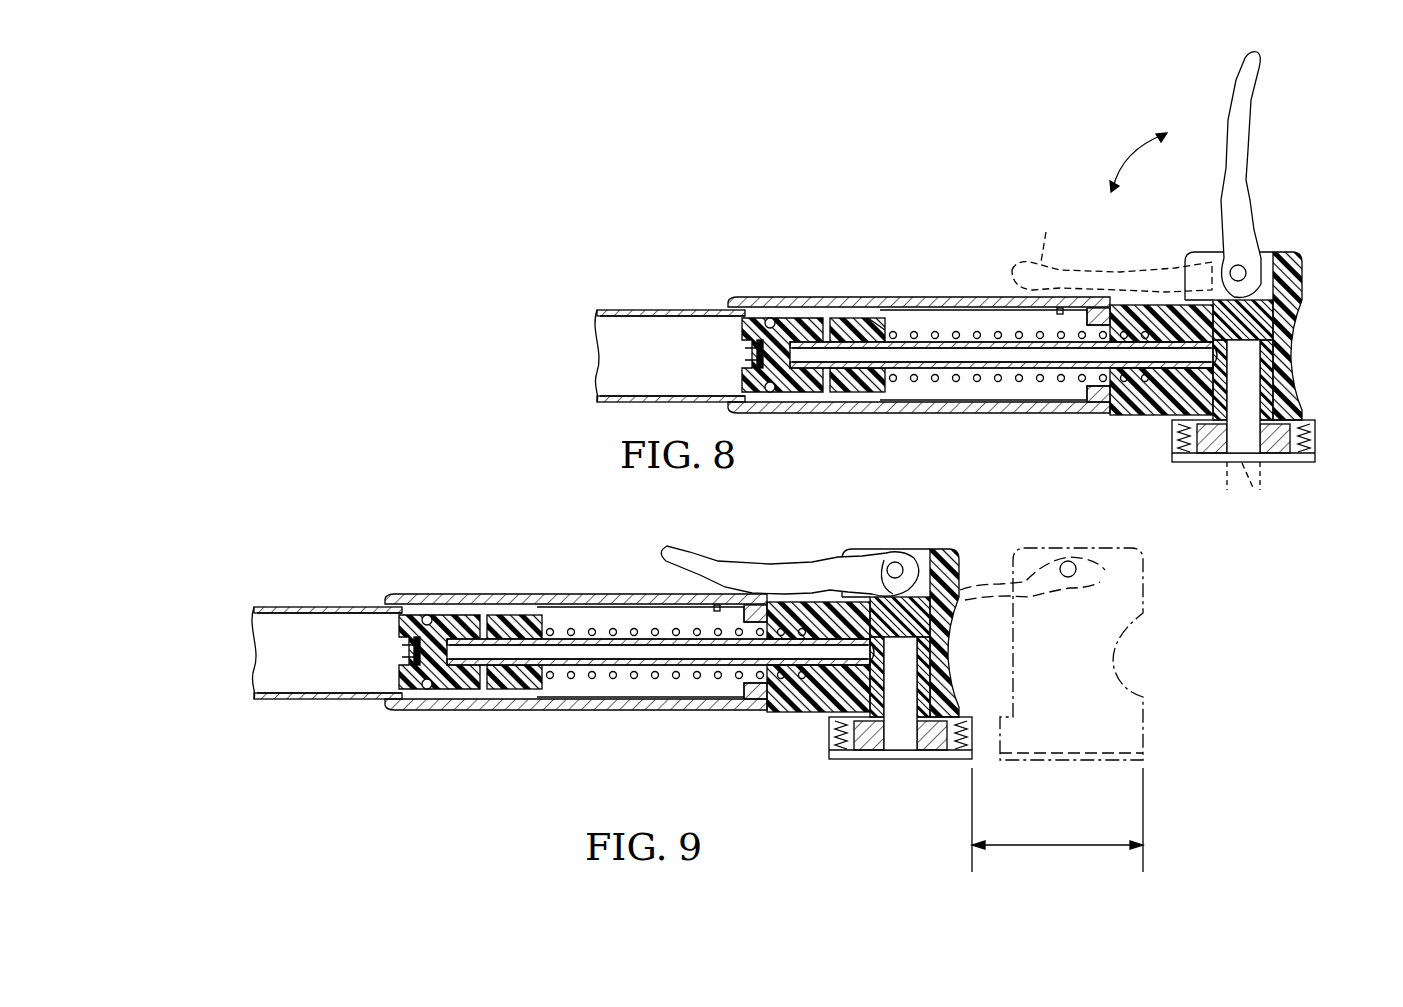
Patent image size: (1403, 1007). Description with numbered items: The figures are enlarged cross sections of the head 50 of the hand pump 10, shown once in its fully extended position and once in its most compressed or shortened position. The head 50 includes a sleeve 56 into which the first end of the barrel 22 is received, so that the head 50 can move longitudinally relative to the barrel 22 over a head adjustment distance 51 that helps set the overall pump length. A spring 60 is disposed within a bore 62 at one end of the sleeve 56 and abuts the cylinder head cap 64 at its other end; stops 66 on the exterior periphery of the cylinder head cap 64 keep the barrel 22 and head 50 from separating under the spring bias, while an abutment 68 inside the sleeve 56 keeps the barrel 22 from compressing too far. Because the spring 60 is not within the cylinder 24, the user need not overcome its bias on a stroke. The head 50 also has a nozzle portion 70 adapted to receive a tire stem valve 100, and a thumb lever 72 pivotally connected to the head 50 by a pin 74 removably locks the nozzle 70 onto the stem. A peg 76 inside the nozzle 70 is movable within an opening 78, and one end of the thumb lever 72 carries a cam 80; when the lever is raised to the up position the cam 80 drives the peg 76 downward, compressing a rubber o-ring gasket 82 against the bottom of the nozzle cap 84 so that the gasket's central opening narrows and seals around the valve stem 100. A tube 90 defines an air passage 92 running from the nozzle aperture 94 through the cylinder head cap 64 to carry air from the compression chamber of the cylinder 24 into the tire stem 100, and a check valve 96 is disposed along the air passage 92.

In FIG. 8, the pump 10 is at (789, 152).
In FIG. 9, the pump 10 is at (386, 527).
In FIG. 8, the barrel 22 is at (632, 310).
In FIG. 9, the barrel 22 is at (278, 602).
In FIG. 8, the internal cylinder 24 is at (613, 342).
In FIG. 9, the internal cylinder 24 is at (297, 668).
In FIG. 8, the head 50 is at (1026, 192).
In FIG. 9, the head 50 is at (573, 517).
In FIG. 9, the head adjustment distance 51 is at (1030, 845).
In FIG. 8, the sleeve 56 is at (775, 297).
In FIG. 9, the sleeve 56 is at (518, 594).
In FIG. 8, the spring 60 is at (937, 333).
In FIG. 9, the spring 60 is at (690, 630).
In FIG. 8, the bore 62 is at (1142, 408).
In FIG. 9, the bore 62 is at (761, 703).
In FIG. 8, the cylinder head cap 64 is at (852, 322).
In FIG. 9, the cylinder head cap 64 is at (657, 618).
In FIG. 8, the stops 66 is at (862, 320).
In FIG. 8, the abutment 68 is at (1045, 330).
In FIG. 9, the abutment 68 is at (722, 686).
In FIG. 8, the nozzle portion 70 is at (1297, 417).
In FIG. 9, the nozzle portion 70 is at (829, 718).
In FIG. 8, the thumb lever 72 is at (1238, 87).
In FIG. 9, the thumb lever 72 is at (693, 562).
In FIG. 8, the pin 74 is at (1236, 266).
In FIG. 9, the pin 74 is at (893, 562).
In FIG. 8, the peg 76 is at (1270, 333).
In FIG. 9, the peg 76 is at (920, 652).
In FIG. 8, the opening 78 is at (1292, 300).
In FIG. 9, the opening 78 is at (933, 628).
In FIG. 8, the cam 80 is at (1250, 268).
In FIG. 9, the cam 80 is at (923, 560).
In FIG. 8, the rubber o-ring gasket 82 is at (1210, 455).
In FIG. 9, the rubber o-ring gasket 82 is at (862, 752).
In FIG. 8, the nozzle cap 84 is at (1175, 441).
In FIG. 9, the nozzle cap 84 is at (838, 760).
In FIG. 8, the tube 90 is at (957, 372).
In FIG. 9, the tube 90 is at (497, 670).
In FIG. 8, the air passage 92 is at (928, 366).
In FIG. 9, the air passage 92 is at (538, 662).
In FIG. 8, the nozzle aperture 94 is at (1268, 462).
In FIG. 9, the nozzle aperture 94 is at (902, 747).
In FIG. 8, the check valve 96 is at (752, 356).
In FIG. 9, the check valve 96 is at (410, 654).
In FIG. 8, the tire stem valve 100 is at (1272, 515).